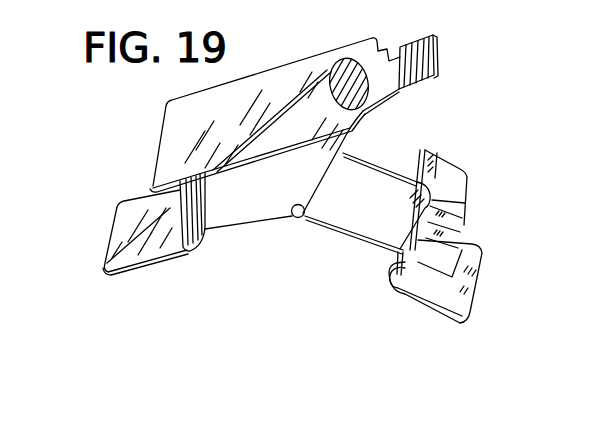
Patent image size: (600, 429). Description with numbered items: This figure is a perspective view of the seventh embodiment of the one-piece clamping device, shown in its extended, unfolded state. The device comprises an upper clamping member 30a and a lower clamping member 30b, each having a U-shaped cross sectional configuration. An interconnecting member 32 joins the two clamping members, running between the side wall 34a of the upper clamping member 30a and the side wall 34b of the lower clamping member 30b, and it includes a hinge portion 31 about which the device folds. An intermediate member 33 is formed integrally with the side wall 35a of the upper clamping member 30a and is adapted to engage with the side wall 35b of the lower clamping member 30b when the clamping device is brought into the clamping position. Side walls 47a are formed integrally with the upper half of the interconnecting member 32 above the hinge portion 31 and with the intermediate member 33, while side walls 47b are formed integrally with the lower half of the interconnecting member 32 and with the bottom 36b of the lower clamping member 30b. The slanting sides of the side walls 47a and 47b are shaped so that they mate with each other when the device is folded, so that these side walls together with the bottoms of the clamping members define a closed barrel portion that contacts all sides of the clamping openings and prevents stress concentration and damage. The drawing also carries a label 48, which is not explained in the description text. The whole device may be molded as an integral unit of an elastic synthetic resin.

The upper clamping member 30a is at (140, 248).
The lower clamping member 30b is at (473, 283).
The hinge portion 31 is at (300, 220).
The interconnecting member 32 is at (338, 213).
The intermediate member 33 is at (300, 77).
The side wall 34a is at (125, 222).
The side wall 34b is at (453, 308).
The side wall 35a is at (183, 115).
The side wall 35b is at (447, 174).
The bottom 36b is at (191, 257).
The side walls 47a is at (233, 216).
The side walls 47b is at (390, 158).
The tab 48 is at (425, 51).